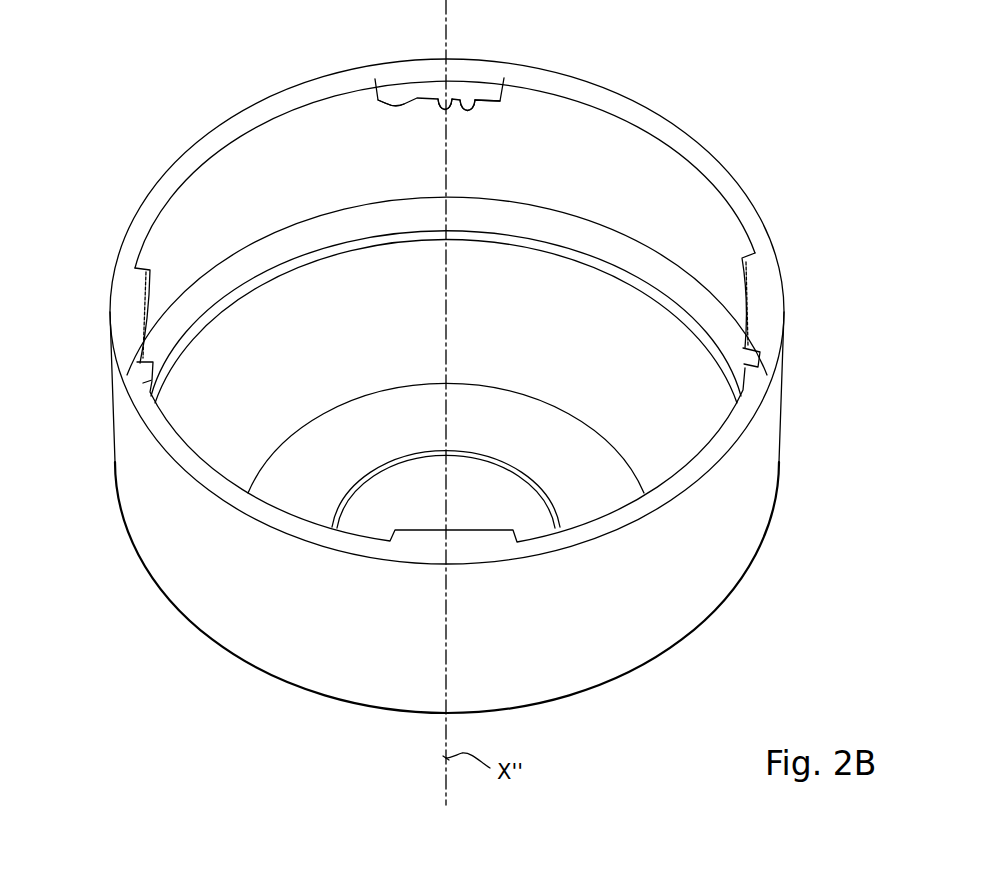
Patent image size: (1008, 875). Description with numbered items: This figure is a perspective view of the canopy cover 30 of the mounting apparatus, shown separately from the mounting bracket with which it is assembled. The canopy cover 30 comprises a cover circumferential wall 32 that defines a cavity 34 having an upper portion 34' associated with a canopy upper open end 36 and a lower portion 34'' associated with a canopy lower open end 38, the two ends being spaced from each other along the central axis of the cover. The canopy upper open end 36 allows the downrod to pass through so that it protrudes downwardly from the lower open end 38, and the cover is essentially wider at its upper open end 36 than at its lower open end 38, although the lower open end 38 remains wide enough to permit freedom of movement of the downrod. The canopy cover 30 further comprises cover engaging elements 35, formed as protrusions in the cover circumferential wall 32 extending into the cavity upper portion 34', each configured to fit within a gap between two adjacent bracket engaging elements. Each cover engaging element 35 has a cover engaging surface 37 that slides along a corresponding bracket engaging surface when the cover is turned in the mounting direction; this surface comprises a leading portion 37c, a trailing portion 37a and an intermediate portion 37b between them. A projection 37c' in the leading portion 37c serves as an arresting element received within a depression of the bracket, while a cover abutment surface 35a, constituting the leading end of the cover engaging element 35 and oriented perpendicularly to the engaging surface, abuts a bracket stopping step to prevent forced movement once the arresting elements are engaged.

The canopy cover 30 is at (461, 366).
The cover circumferential wall 32 is at (723, 517).
The cavity 34 is at (447, 311).
The upper portion of cavity 34' is at (142, 191).
The lower portion of cavity 34'' is at (357, 498).
The cover engaging element 35 is at (758, 303).
The cover abutment surface 35a is at (378, 98).
The canopy upper open end 36 is at (218, 396).
The cover engaging surface 37 is at (478, 98).
The trailing portion of cover engaging surface 37a is at (500, 102).
The intermediate portion of cover engaging surface 37b is at (444, 110).
The leading portion of cover engaging surface 37c is at (336, 127).
The projection 37c' is at (368, 156).
The canopy lower open end 38 is at (510, 499).